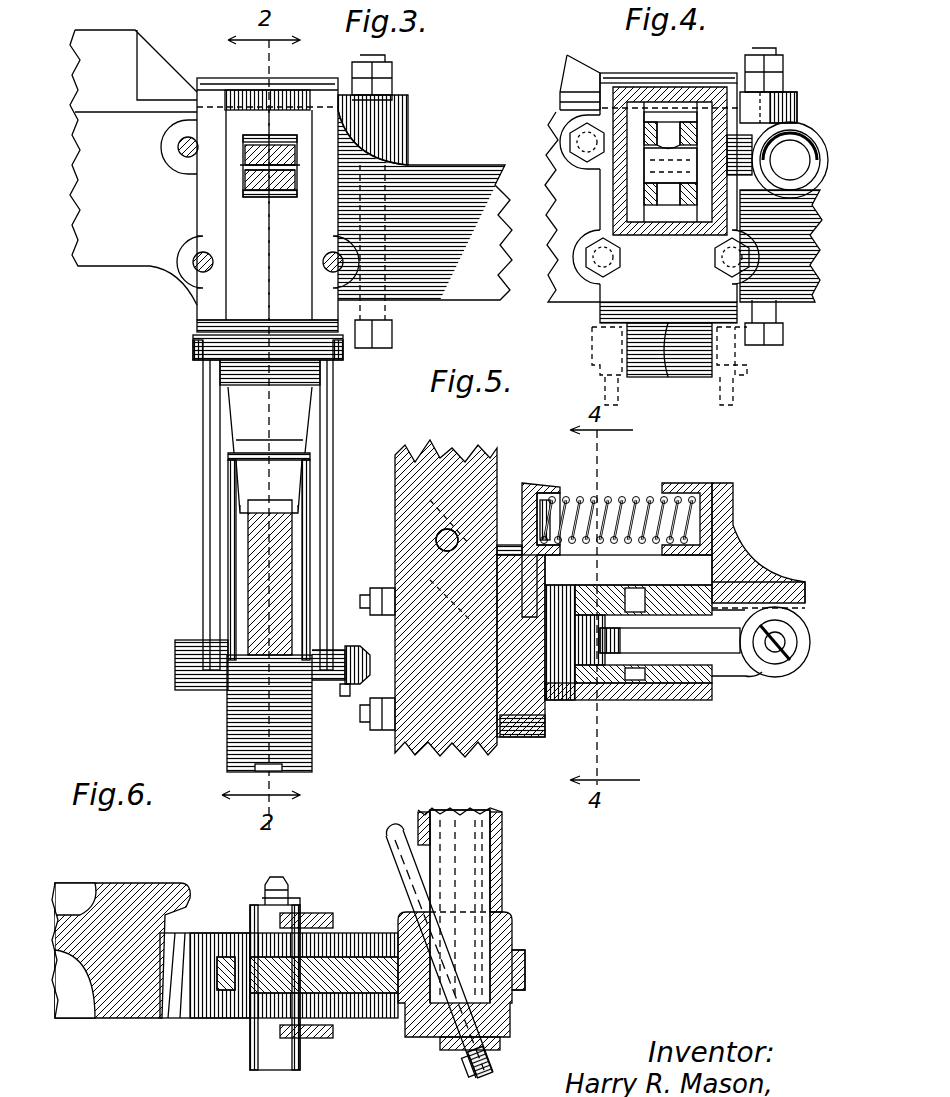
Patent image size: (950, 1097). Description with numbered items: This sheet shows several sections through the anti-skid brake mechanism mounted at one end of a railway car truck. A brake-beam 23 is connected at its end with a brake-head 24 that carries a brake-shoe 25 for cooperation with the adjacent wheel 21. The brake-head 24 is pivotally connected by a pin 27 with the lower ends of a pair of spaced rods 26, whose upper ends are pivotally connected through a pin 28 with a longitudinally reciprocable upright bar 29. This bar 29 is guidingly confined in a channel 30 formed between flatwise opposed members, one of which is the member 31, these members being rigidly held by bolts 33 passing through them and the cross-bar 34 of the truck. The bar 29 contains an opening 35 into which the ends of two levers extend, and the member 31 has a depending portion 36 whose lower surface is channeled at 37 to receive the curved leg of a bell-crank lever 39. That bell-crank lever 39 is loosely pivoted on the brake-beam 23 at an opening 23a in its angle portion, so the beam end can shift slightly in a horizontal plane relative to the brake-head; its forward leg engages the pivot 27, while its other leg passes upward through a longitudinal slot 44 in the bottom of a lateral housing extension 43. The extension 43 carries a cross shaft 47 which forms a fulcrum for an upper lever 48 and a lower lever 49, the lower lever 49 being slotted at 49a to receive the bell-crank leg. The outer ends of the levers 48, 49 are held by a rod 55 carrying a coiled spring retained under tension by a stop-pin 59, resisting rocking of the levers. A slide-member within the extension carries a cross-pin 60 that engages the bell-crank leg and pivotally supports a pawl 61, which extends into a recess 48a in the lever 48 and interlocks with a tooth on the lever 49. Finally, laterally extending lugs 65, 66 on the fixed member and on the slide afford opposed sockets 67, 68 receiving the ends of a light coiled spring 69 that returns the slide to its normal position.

In FIG. 6, the wheel 21 is at (125, 1003).
In FIG. 6, the brake-beam 23 is at (502, 868).
In FIG. 6, the opening in angle-portion of brake-beam 23a is at (525, 963).
In FIG. 6, the brake-head 24 is at (398, 940).
In FIG. 3, the brake-shoe 25 is at (312, 765).
In FIG. 6, the brake-shoe 25 is at (190, 1020).
In FIG. 3, the rods 26 is at (205, 436).
In FIG. 4, the rods 26 is at (610, 390).
In FIG. 6, the rods 26 is at (328, 915).
In FIG. 3, the pin 27 is at (175, 665).
In FIG. 6, the pin 27 is at (290, 892).
In FIG. 3, the pin 28 is at (193, 355).
In FIG. 4, the pin 28 is at (592, 355).
In FIG. 3, the upright bar 29 is at (252, 215).
In FIG. 4, the upright bar 29 is at (670, 378).
In FIG. 5, the upright bar 29 is at (528, 737).
In FIG. 3, the channel 30 is at (190, 296).
In FIG. 3, the member 31 is at (215, 100).
In FIG. 5, the member 31 is at (515, 738).
In FIG. 3, the bolts 33 is at (180, 147).
In FIG. 4, the bolts 33 is at (580, 140).
In FIG. 5, the bolts 33 is at (385, 602).
In FIG. 3, the cross-bar 34 is at (460, 175).
In FIG. 4, the cross-bar 34 is at (683, 207).
In FIG. 5, the cross-bar 34 is at (450, 755).
In FIG. 3, the opening 35 is at (253, 196).
In FIG. 3, the depending portion 36 is at (242, 484).
In FIG. 3, the channel 37 is at (240, 507).
In FIG. 3, the bell-crank lever 39 is at (292, 545).
In FIG. 6, the bell-crank lever 39 is at (347, 990).
In FIG. 4, the lateral extension 43 is at (613, 108).
In FIG. 4, the slot 44 is at (676, 232).
In FIG. 5, the shaft 47 is at (628, 627).
In FIG. 3, the lever 48 is at (278, 145).
In FIG. 4, the lever 48 is at (690, 118).
In FIG. 5, the lever 48 is at (600, 613).
In FIG. 4, the recess in lever 48a is at (668, 138).
In FIG. 5, the recess in lever 48a is at (598, 660).
In FIG. 3, the lever 49 is at (280, 192).
In FIG. 4, the lever 49 is at (688, 148).
In FIG. 4, the slot in lever 49a is at (662, 200).
In FIG. 5, the rod 55 is at (760, 610).
In FIG. 5, the stop-pin 59 is at (775, 677).
In FIG. 5, the cross-pin 60 is at (640, 600).
In FIG. 5, the pawl 61 is at (680, 640).
In FIG. 5, the lug 65 is at (527, 483).
In FIG. 5, the lug 66 is at (730, 486).
In FIG. 4, the socket 67 is at (790, 130).
In FIG. 5, the socket 67 is at (558, 493).
In FIG. 5, the socket 68 is at (690, 483).
In FIG. 4, the coiled spring 69 is at (790, 185).
In FIG. 5, the coiled spring 69 is at (636, 497).